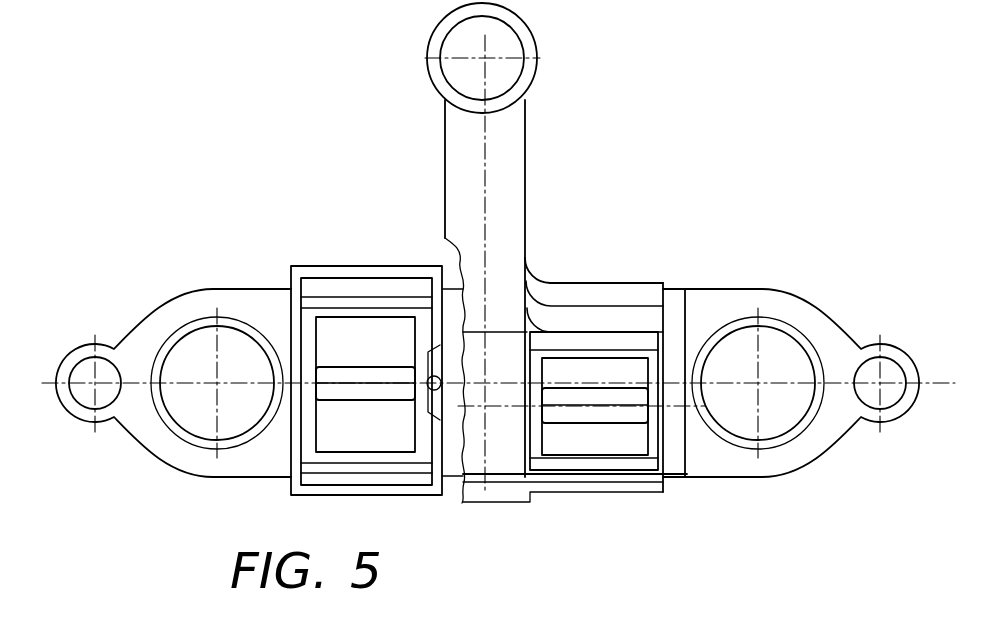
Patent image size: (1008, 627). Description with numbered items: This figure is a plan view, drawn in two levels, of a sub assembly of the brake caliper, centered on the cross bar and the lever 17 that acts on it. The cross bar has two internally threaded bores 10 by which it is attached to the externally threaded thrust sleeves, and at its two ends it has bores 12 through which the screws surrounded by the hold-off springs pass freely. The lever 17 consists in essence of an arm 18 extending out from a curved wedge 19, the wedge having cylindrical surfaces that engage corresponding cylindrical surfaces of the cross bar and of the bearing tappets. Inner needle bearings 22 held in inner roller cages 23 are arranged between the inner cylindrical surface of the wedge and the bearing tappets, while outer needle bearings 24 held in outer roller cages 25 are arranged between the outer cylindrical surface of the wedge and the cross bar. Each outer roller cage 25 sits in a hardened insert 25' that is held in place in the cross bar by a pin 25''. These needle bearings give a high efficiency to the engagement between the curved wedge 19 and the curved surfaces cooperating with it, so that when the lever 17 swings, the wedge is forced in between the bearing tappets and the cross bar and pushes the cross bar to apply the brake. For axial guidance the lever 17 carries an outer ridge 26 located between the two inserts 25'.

The internally threaded bores 10 is at (193, 345).
The bores 12 is at (100, 372).
The lever 17 is at (527, 150).
The arm 18 is at (510, 197).
The curved wedge 19 is at (507, 350).
The inner needle bearings 22 is at (583, 413).
The inner roller cages 23 is at (623, 467).
The outer needle bearings 24 is at (336, 376).
The outer roller cages 25 is at (349, 353).
The hardened insert 25' is at (366, 348).
The pin 25'' is at (407, 316).
The outer ridge 26 is at (504, 490).